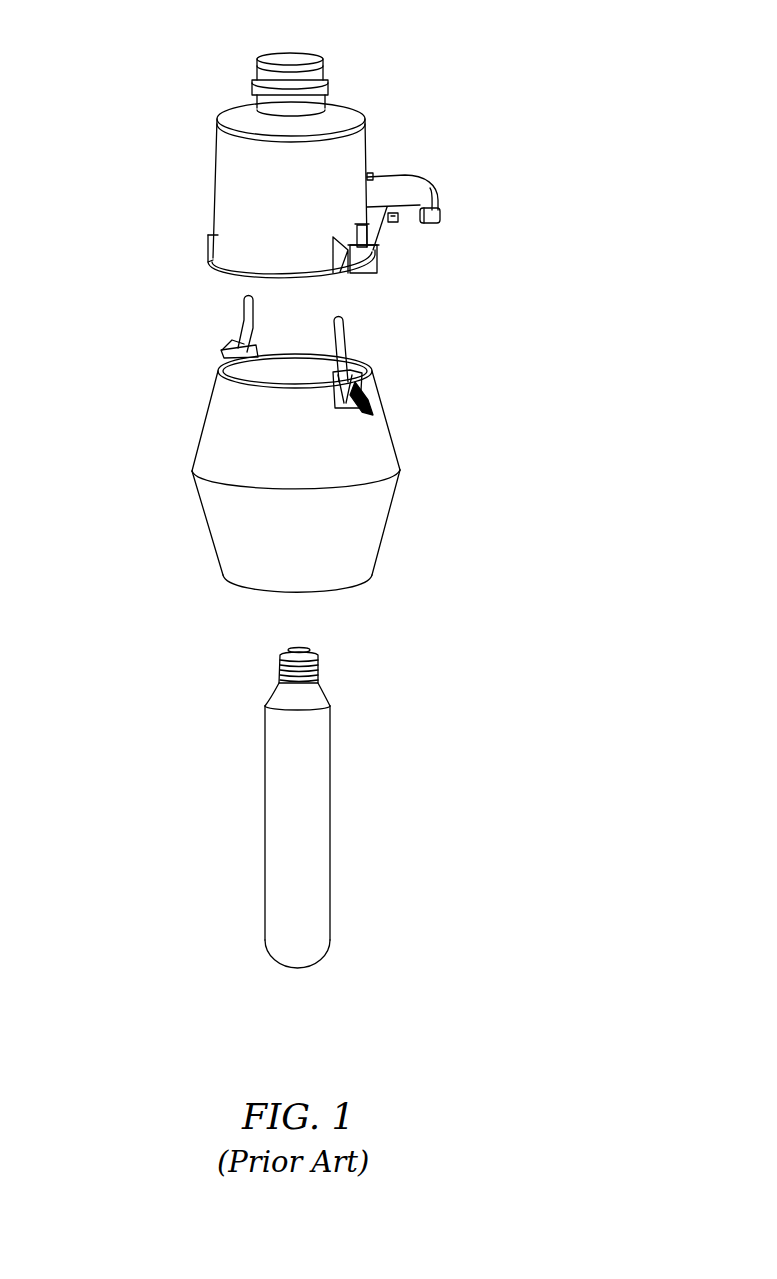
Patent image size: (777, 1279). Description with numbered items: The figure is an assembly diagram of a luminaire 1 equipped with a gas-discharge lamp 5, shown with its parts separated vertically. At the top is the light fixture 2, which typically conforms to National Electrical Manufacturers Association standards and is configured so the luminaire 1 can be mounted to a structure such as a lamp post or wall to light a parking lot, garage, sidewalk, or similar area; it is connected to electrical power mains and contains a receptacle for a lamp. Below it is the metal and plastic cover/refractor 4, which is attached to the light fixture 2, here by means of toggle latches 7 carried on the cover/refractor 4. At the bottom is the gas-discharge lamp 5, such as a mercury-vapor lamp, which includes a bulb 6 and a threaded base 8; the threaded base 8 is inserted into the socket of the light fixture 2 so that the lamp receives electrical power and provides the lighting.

The luminaire 1 is at (125, 83).
The light fixture 2 is at (367, 140).
The cover/refractor 4 is at (387, 428).
The gas-discharge lamp 5 is at (193, 713).
The bulb 6 is at (330, 817).
The toggle latches 7 is at (343, 330).
The threaded base 8 is at (312, 652).